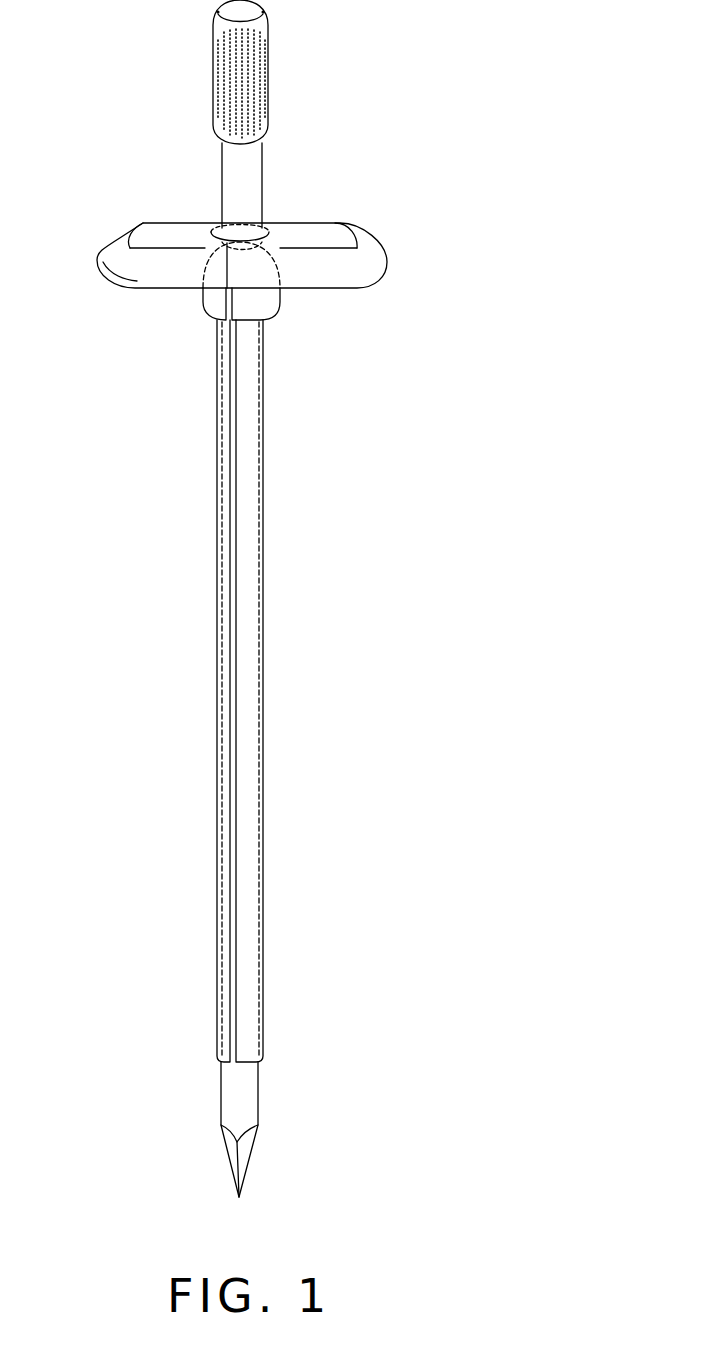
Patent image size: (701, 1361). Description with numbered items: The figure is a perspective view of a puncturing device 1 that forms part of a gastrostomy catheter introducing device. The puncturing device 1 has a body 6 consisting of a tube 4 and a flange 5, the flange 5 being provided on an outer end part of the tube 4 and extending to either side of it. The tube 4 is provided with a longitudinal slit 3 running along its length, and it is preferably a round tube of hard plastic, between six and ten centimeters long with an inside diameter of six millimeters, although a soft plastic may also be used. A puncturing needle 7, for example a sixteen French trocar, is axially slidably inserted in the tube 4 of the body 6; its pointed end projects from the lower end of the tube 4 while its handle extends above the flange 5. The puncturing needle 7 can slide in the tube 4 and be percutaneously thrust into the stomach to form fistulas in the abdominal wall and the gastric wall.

The puncturing device 1 is at (178, 194).
The longitudinal slit 3 is at (232, 722).
The tube 4 is at (250, 724).
The flange 5 is at (358, 240).
The body 6 is at (296, 502).
The puncturing needle 7 is at (247, 200).